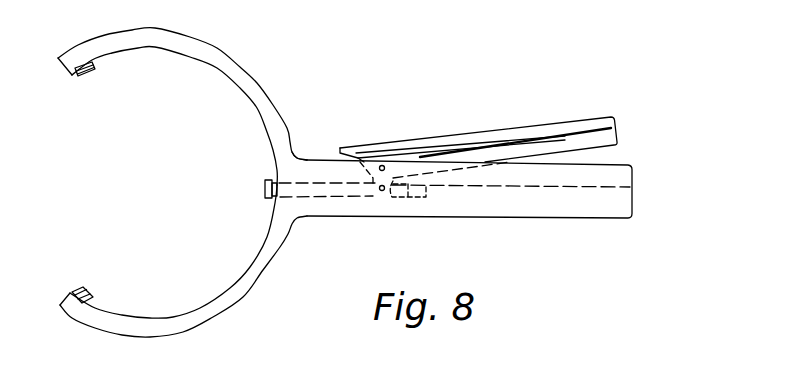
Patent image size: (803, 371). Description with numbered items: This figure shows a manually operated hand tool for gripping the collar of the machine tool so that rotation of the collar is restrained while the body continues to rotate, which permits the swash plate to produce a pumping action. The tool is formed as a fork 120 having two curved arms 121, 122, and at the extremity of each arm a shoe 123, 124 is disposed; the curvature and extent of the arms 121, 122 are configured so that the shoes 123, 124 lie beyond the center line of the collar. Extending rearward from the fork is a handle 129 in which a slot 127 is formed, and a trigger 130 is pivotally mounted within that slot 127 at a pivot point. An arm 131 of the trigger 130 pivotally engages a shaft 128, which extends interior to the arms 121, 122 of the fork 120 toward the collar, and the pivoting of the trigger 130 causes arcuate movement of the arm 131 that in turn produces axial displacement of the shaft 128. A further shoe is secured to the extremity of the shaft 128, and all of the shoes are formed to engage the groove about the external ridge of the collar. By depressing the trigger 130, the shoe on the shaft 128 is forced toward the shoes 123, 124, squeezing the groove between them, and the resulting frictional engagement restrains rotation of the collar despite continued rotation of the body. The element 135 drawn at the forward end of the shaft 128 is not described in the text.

The fork 120 is at (348, 122).
The curved arm 121 is at (217, 53).
The curved arm 122 is at (225, 292).
The shoe 123 is at (92, 76).
The shoe 124 is at (88, 290).
The slot 127 is at (425, 200).
The shaft 128 is at (312, 193).
The handle 129 is at (490, 219).
The trigger 130 is at (490, 131).
The arm 131 is at (378, 192).
The end cap 135 is at (265, 182).